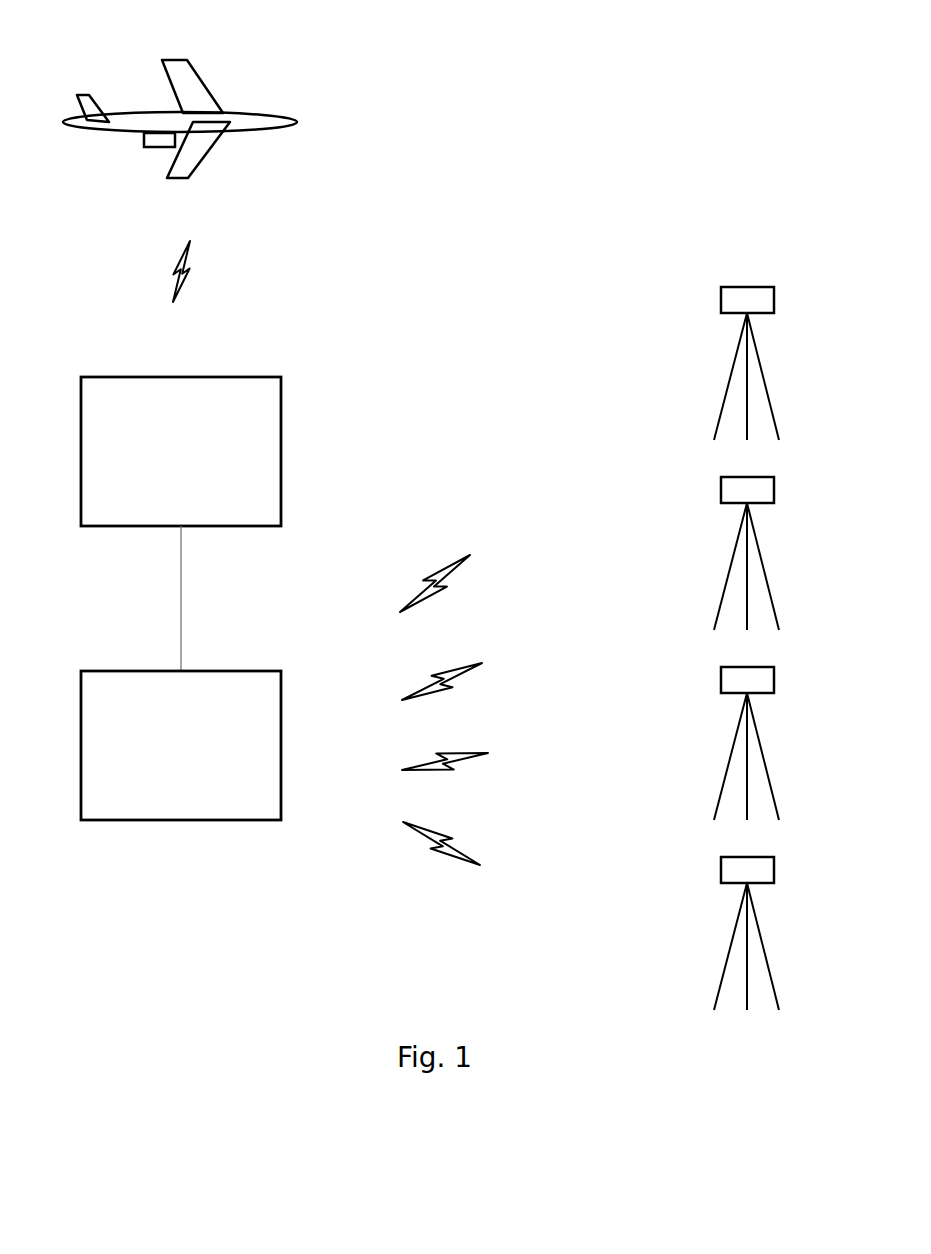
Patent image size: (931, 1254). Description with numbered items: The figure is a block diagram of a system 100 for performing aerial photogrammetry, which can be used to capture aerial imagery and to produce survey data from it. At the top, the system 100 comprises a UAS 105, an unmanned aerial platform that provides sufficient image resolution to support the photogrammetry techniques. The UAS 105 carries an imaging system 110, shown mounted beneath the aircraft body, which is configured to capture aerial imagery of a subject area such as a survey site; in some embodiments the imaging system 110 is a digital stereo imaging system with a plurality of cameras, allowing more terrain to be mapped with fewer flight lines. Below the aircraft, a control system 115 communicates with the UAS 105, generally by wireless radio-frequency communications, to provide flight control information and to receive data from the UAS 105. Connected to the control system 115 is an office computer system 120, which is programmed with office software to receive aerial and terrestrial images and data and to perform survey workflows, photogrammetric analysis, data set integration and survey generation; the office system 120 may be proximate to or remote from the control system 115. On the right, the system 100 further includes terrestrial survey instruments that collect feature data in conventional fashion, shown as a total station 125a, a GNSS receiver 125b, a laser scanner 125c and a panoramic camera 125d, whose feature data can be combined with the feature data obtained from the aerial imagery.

The system 100 is at (682, 1052).
The UAS 105 is at (255, 113).
The imaging system 110 is at (140, 139).
The control system 115 is at (281, 451).
The office computer system 120 is at (281, 746).
The total station 125a is at (774, 300).
The GNSS receiver 125b is at (774, 490).
The laser scanner 125c is at (774, 680).
The panoramic camera 125d is at (774, 870).